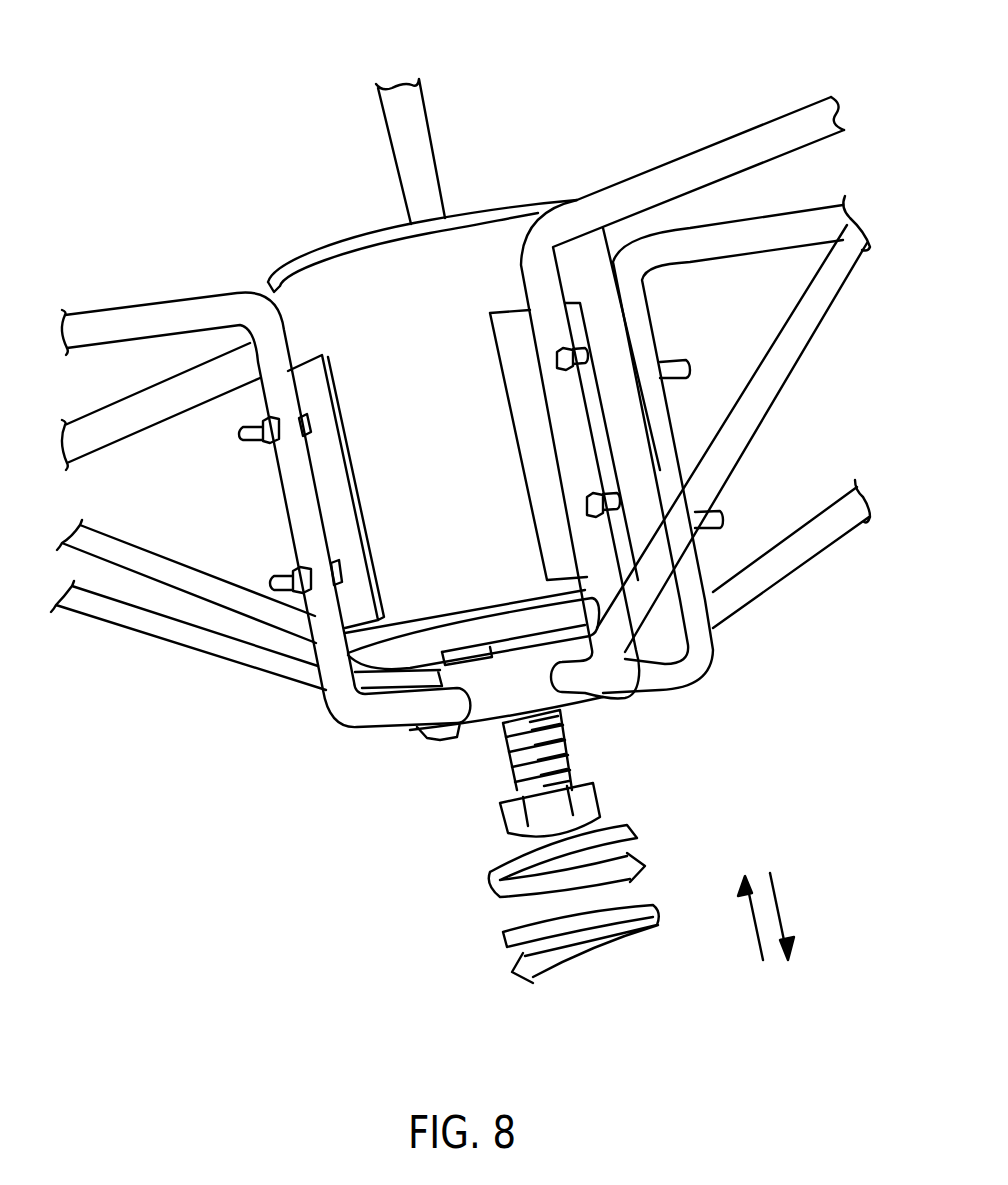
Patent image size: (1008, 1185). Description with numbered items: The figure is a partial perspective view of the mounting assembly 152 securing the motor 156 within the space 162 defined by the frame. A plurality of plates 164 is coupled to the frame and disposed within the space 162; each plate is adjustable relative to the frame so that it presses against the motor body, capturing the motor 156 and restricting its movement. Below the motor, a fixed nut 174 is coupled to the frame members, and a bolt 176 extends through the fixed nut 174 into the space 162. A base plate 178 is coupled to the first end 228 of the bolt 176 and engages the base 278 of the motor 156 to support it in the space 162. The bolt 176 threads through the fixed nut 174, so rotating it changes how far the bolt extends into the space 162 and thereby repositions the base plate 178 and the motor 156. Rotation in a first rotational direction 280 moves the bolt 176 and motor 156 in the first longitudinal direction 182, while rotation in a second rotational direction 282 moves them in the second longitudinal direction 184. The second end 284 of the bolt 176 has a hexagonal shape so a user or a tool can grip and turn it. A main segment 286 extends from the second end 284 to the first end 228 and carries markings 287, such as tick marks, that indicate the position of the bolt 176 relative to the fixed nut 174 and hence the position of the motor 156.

The mounting assembly 152 is at (791, 96).
The motor 156 is at (280, 288).
The space 162 is at (250, 290).
The plates 164 is at (320, 392).
The fixed nut 174 is at (607, 700).
The bolt 176 is at (587, 780).
The base plate 178 is at (462, 662).
The first longitudinal direction 182 is at (753, 923).
The second longitudinal direction 184 is at (778, 910).
The first end 228 is at (495, 663).
The base 278 is at (418, 662).
The first rotational direction 280 is at (633, 830).
The second rotational direction 282 is at (503, 933).
The second end 284 is at (510, 818).
The main segment 286 is at (565, 782).
The markings 287 is at (565, 752).